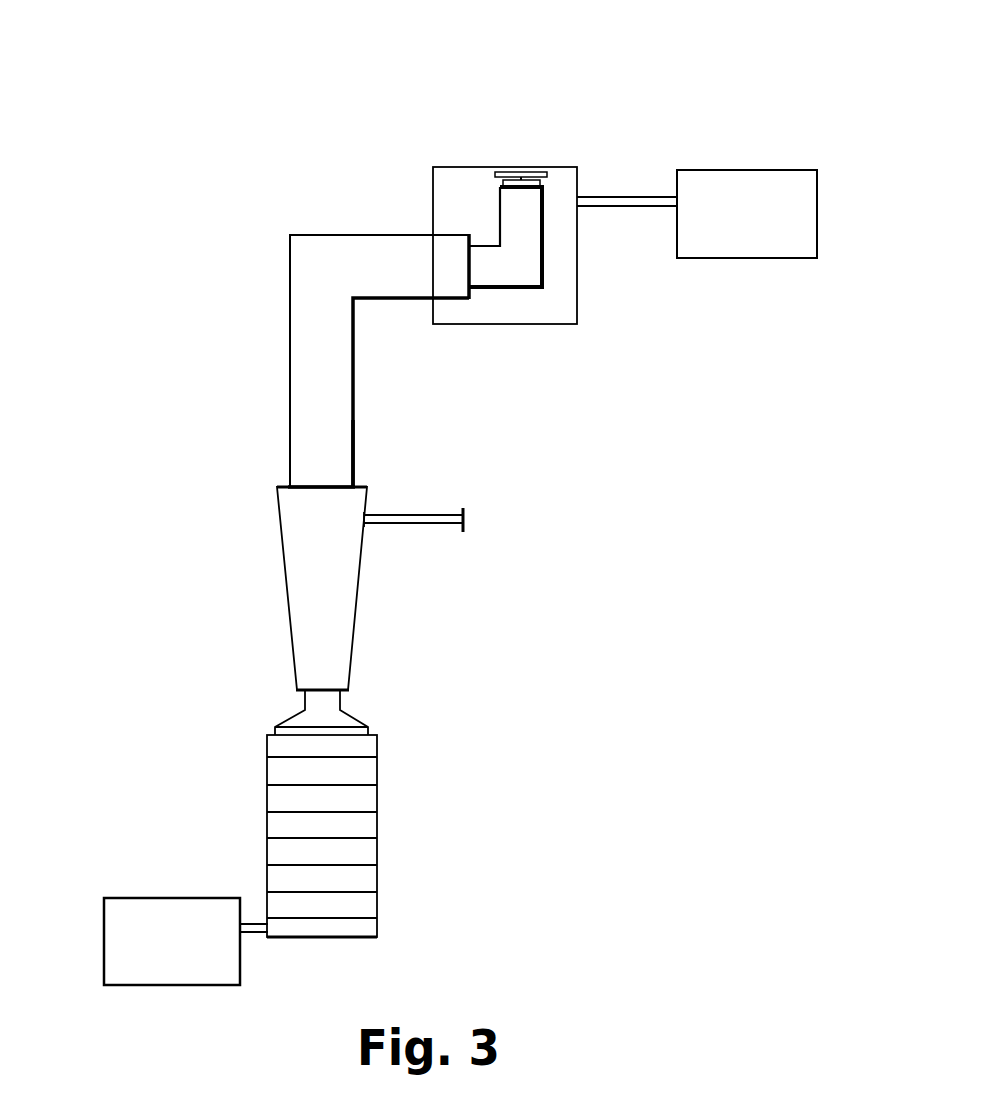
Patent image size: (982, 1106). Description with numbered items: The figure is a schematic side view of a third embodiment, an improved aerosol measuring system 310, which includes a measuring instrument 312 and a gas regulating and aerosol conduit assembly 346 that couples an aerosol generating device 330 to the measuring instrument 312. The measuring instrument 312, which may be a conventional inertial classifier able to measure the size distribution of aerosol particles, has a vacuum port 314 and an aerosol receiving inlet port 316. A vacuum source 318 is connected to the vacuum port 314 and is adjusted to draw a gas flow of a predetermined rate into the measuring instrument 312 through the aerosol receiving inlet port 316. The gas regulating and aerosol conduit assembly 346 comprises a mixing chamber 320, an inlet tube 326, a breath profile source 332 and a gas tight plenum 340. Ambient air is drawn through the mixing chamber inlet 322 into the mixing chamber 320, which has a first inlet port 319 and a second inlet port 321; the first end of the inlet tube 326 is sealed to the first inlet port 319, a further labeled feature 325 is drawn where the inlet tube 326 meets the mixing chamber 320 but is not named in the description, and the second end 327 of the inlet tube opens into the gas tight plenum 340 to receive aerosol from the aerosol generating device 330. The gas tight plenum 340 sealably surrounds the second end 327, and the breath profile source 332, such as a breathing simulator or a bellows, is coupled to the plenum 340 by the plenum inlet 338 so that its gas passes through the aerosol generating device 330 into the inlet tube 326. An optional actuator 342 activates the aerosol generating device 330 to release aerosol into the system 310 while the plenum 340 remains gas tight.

The aerosol measuring system 310 is at (220, 152).
The measuring instrument 312 is at (267, 812).
The vacuum port 314 is at (253, 937).
The aerosol receiving inlet port 316 is at (346, 701).
The vacuum source 318 is at (103, 950).
The first inlet port 319 is at (290, 483).
The mixing chamber 320 is at (283, 580).
The second inlet port 321 is at (370, 532).
The mixing chamber inlet 322 is at (383, 508).
The inner conduit wall 325 is at (318, 480).
The inlet tube 326 is at (289, 318).
The second end 327 is at (467, 255).
The aerosol generating device 330 is at (498, 208).
The breath profile source 332 is at (777, 262).
The plenum inlet 338 is at (616, 195).
The gas tight plenum 340 is at (578, 292).
The actuator 342 is at (538, 172).
The gas regulating and aerosol conduit assembly 346 is at (567, 405).